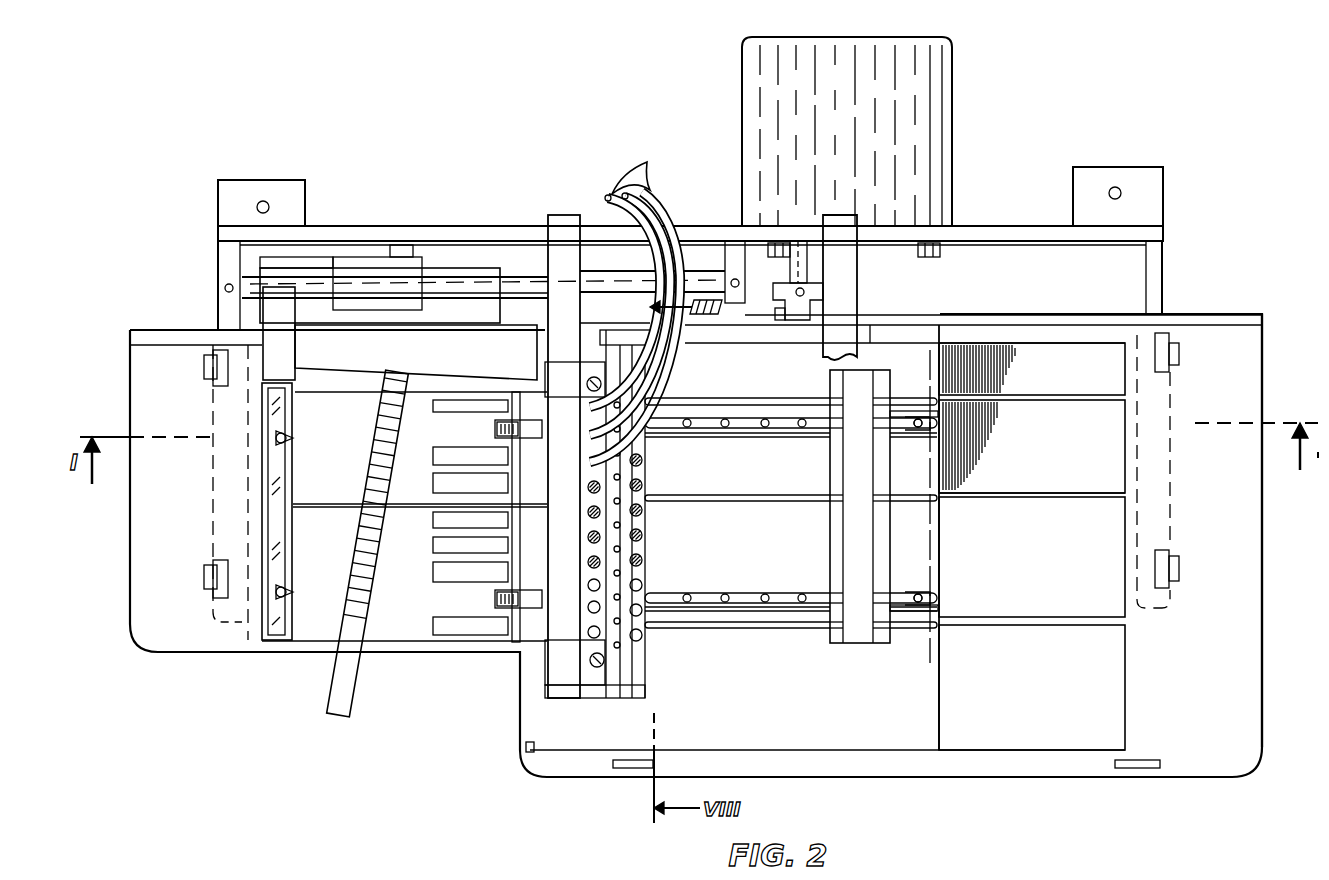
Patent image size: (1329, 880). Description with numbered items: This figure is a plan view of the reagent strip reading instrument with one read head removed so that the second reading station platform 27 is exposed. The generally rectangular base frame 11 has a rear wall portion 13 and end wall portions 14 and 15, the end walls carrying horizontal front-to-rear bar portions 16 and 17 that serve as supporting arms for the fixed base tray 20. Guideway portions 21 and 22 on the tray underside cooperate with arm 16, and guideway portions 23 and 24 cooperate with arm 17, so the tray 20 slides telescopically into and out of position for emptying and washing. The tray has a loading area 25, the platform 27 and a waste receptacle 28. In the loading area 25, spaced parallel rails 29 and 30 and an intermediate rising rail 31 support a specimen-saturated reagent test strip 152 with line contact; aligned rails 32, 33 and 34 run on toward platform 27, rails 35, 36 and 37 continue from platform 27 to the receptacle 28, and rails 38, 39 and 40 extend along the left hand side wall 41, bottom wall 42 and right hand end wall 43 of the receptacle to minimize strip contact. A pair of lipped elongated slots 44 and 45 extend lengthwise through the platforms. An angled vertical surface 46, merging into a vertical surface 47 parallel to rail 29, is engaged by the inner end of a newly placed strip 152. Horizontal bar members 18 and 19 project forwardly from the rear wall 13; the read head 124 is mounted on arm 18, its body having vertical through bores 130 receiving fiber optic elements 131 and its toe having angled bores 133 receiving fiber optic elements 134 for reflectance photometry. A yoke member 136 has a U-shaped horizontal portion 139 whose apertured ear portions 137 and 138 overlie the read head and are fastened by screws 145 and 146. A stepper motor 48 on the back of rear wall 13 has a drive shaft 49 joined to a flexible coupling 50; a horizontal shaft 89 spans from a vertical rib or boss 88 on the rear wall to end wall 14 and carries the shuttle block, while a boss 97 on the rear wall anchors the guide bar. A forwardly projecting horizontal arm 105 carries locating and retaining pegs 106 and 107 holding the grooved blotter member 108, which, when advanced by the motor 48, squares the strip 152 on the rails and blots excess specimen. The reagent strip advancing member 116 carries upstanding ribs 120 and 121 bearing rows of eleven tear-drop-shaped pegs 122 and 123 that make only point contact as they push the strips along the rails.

The base frame 11 is at (466, 224).
The rear wall portion 13 is at (1004, 223).
The end wall portion 14 is at (218, 262).
The end wall portion 15 is at (1164, 270).
The bar portion 16 is at (218, 390).
The bar portion 17 is at (1170, 368).
The horizontal bar member 18 is at (566, 240).
The horizontal bar member 19 is at (840, 285).
The fixed base tray 20 is at (522, 752).
The guideway portion 21 is at (205, 365).
The guideway portion 22 is at (205, 578).
The guideway portion 23 is at (1179, 351).
The guideway portion 24 is at (1180, 568).
The loading area 25 is at (310, 572).
The second reading station platform 27 is at (873, 538).
The waste receptacle 28 is at (1053, 562).
The rail 29 is at (352, 394).
The rail 30 is at (416, 650).
The intermediate rail 31 is at (416, 507).
The rail 32 is at (788, 399).
The rail 33 is at (788, 629).
The rail 34 is at (748, 502).
The rail 35 is at (922, 400).
The rail 36 is at (920, 624).
The rail 37 is at (913, 497).
The rail 38 is at (1040, 395).
The rail 39 is at (1065, 626).
The rail 40 is at (1040, 494).
The left hand side wall 41 is at (942, 562).
The bottom wall 42 is at (1022, 456).
The right hand end wall 43 is at (1123, 444).
The elongated slot 44 is at (778, 430).
The elongated slot 45 is at (776, 596).
The vertical surface 46 is at (373, 385).
The vertical surface 47 is at (512, 381).
The stepper motor 48 is at (950, 106).
The drive shaft 49 is at (806, 266).
The flexible coupling 50 is at (815, 313).
The vertical rib or boss 88 is at (728, 275).
The horizontal shaft 89 is at (245, 290).
The boss 97 is at (400, 245).
The horizontal arm 105 is at (294, 338).
The locating and retaining peg 106 is at (292, 440).
The locating and retaining peg 107 is at (292, 590).
The blotter member 108 is at (295, 522).
The reagent strip advancing member 116 is at (925, 422).
The rib 120 is at (710, 430).
The rib 121 is at (712, 596).
The test strip engaging peg 122 is at (532, 436).
The test strip engaging peg 123 is at (532, 592).
The read head 124 is at (648, 683).
The vertical through bore 130 is at (588, 590).
The fiber optic element 131 is at (640, 175).
The angled through bore 133 is at (640, 580).
The fiber optic element 134 is at (643, 488).
The yoke member 136 is at (548, 660).
The ear portion 137 is at (592, 365).
The ear portion 138 is at (592, 692).
The horizontal portion 139 is at (548, 504).
The screw 145 is at (587, 384).
The screw 146 is at (590, 660).
The reagent test strip 152 is at (326, 700).